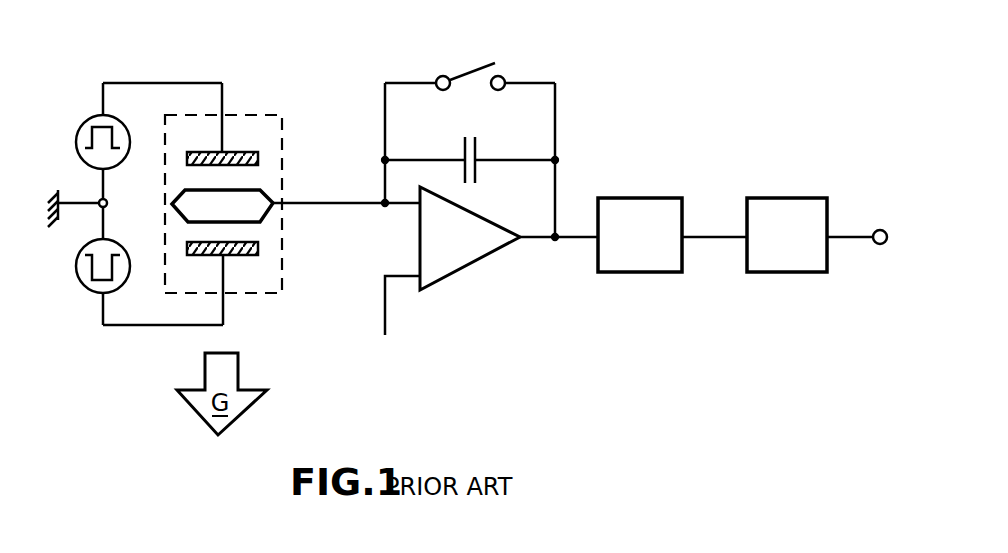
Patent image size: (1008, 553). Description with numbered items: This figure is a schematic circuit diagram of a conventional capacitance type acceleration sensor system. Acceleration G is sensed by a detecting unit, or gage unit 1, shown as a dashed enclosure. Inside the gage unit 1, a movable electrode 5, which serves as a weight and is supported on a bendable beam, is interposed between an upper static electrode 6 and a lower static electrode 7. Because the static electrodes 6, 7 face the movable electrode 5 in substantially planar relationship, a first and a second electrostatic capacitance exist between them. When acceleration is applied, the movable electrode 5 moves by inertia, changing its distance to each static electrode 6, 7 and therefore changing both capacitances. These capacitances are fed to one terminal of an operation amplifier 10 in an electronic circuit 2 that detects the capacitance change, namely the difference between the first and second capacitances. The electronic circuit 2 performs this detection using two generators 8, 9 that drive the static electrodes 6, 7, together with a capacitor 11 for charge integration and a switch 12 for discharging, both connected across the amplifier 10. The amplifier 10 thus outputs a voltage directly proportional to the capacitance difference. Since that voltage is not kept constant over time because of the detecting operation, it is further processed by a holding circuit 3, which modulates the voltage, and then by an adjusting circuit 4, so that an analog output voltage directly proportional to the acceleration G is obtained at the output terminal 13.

The detecting unit 1 is at (232, 99).
The electronic circuit 2 is at (578, 105).
The holding circuit 3 is at (658, 198).
The adjusting circuit 4 is at (797, 198).
The movable electrode 5 is at (263, 194).
The upper static electrode 6 is at (247, 150).
The lower static electrode 7 is at (250, 256).
The generator 8 is at (85, 120).
The generator 9 is at (85, 290).
The operation amplifier 10 is at (462, 268).
The capacitor 11 is at (475, 147).
The switch 12 is at (473, 64).
The terminal 13 is at (883, 245).